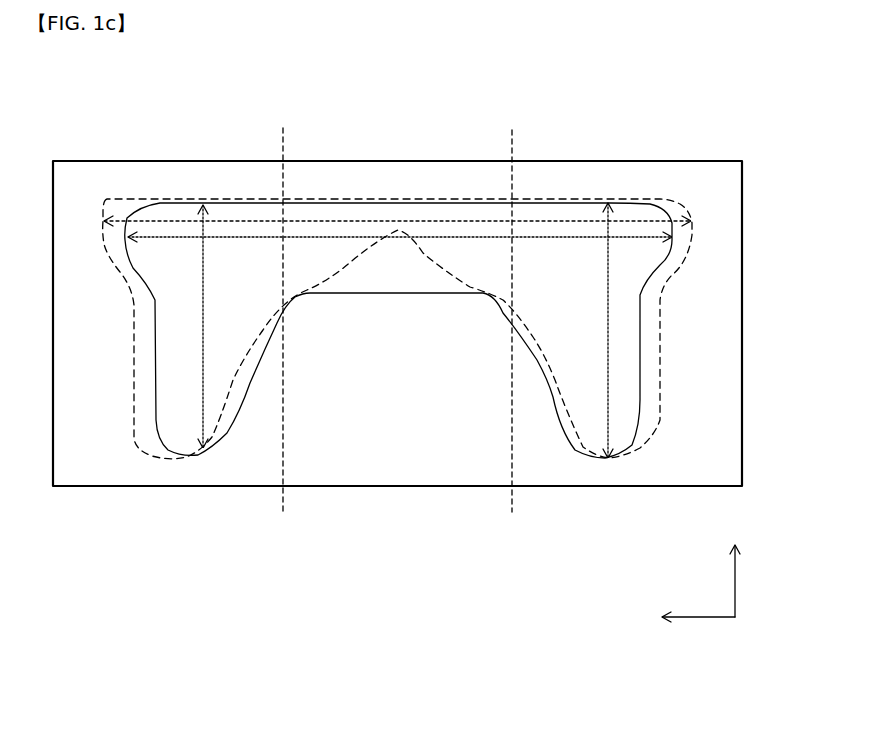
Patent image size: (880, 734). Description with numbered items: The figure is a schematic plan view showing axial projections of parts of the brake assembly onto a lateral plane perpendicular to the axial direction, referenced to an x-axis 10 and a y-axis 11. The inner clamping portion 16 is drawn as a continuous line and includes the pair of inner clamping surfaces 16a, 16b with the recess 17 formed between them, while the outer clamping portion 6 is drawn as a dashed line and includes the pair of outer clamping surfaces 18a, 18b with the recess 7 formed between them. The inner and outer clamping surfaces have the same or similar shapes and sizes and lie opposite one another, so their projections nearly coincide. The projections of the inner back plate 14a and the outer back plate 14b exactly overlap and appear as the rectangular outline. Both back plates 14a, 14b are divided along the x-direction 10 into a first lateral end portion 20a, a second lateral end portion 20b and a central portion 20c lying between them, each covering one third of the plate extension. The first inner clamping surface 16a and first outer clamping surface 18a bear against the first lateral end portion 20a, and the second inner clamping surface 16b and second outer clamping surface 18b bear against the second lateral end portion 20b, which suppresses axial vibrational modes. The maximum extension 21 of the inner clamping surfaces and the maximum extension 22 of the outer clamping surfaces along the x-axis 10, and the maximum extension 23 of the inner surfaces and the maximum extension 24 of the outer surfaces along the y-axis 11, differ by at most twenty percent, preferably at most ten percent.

The outer clamping portion 6 is at (663, 317).
The recess 7 is at (403, 338).
The x-axis 10 is at (695, 615).
The y-axis 11 is at (733, 580).
The inner back plate 14a is at (742, 397).
The outer back plate 14b is at (742, 295).
The inner clamping portion 16 is at (638, 403).
The first inner clamping surface 16a is at (582, 257).
The second inner clamping surface 16b is at (220, 262).
The recess 17 is at (408, 404).
The first outer clamping surface 18a is at (598, 362).
The second outer clamping surface 18b is at (218, 350).
The first lateral end portion 20a is at (625, 518).
The second lateral end portion 20b is at (155, 507).
The central portion 20c is at (390, 512).
The maximum extension 21 is at (453, 238).
The maximum extension 22 is at (350, 223).
The maximum extension 23 is at (203, 283).
The maximum extension 24 is at (608, 280).